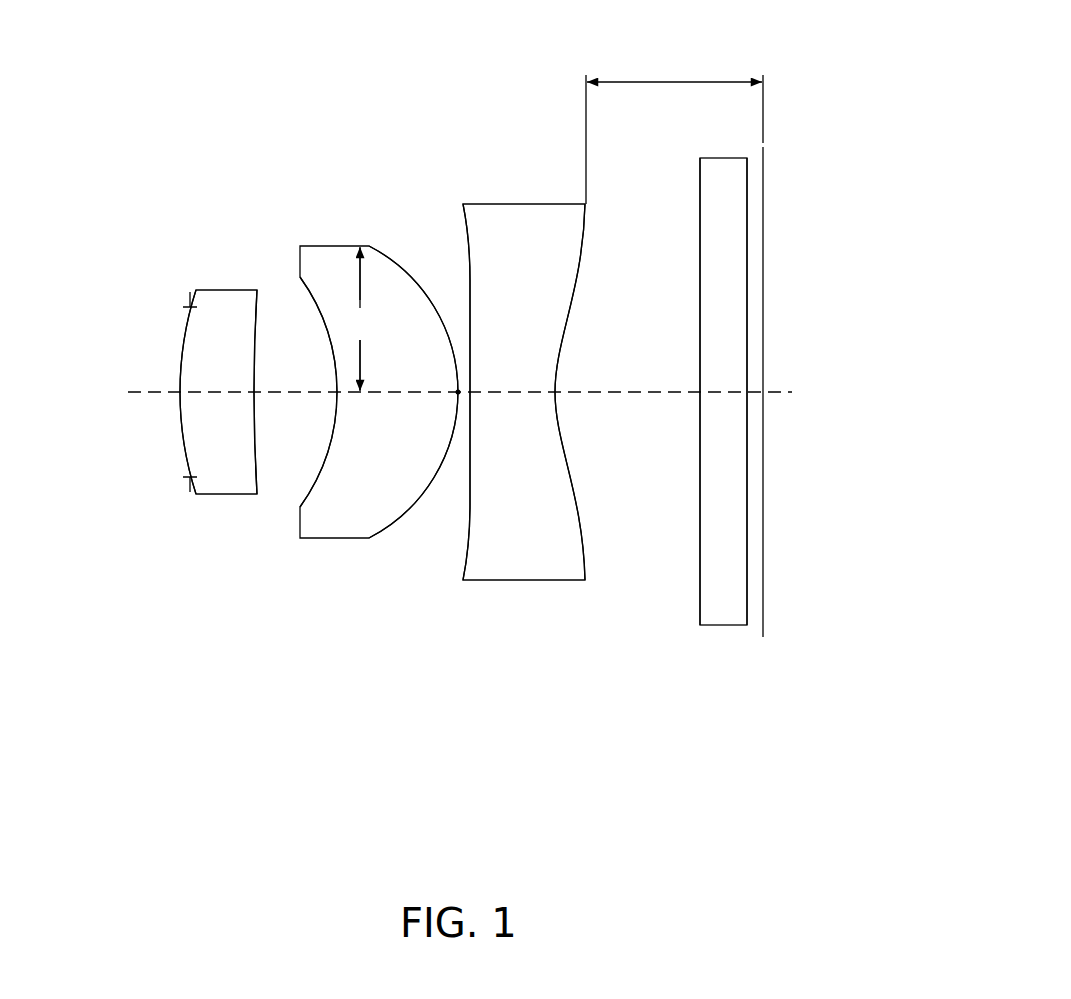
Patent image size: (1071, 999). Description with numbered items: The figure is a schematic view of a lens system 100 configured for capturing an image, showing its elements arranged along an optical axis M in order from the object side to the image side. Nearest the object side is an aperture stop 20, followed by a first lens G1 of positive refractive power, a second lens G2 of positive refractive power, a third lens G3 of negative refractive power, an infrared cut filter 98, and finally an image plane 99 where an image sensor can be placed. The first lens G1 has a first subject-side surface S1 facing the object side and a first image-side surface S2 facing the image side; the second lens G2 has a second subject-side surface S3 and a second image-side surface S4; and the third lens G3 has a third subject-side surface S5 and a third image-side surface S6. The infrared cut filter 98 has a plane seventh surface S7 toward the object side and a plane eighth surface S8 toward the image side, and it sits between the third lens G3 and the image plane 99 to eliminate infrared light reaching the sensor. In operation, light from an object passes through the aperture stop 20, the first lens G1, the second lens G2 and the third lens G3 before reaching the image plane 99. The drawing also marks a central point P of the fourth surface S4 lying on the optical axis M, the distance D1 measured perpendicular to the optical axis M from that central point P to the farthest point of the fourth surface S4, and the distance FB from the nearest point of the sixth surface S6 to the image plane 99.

The lens system 100 is at (421, 49).
The aperture stop 20 is at (188, 303).
The first lens G1 is at (233, 318).
The second lens G2 is at (343, 277).
The third lens G3 is at (522, 238).
The first subject-side surface S1 is at (180, 343).
The first image-side surface S2 is at (260, 342).
The second subject-side surface S3 is at (318, 466).
The second image-side surface S4 is at (394, 523).
The third subject-side surface S5 is at (467, 517).
The third image-side surface S6 is at (591, 545).
The seventh surface S7 is at (695, 574).
The eighth surface S8 is at (748, 619).
The central point P is at (458, 390).
The orthogonal distance D1 is at (362, 319).
The optical axis M is at (632, 393).
The distance FB is at (674, 130).
The infrared cut filter 98 is at (722, 168).
The image plane 99 is at (763, 172).